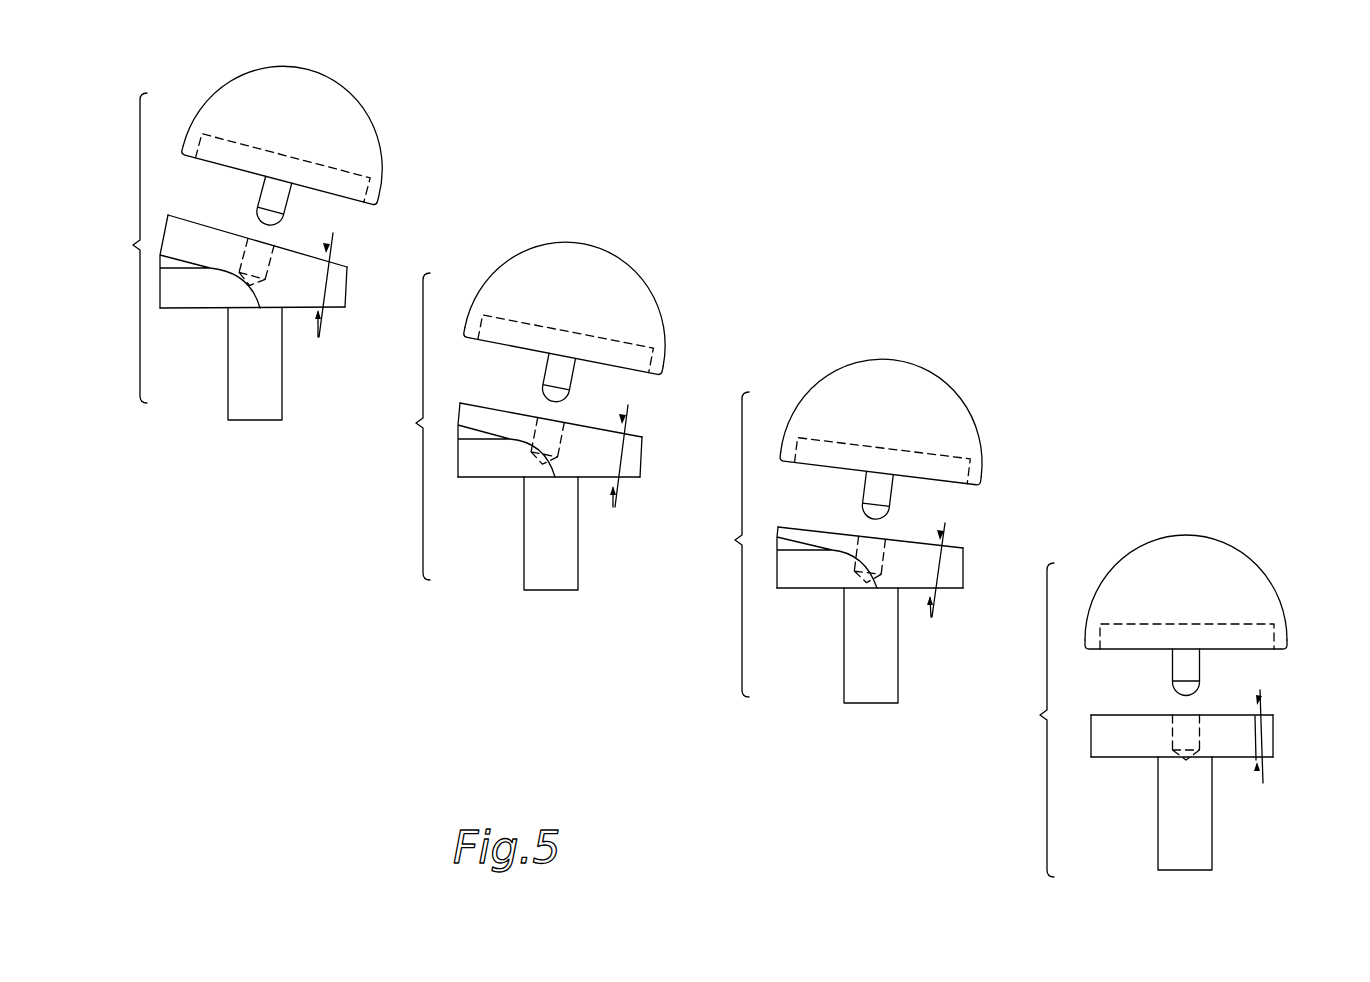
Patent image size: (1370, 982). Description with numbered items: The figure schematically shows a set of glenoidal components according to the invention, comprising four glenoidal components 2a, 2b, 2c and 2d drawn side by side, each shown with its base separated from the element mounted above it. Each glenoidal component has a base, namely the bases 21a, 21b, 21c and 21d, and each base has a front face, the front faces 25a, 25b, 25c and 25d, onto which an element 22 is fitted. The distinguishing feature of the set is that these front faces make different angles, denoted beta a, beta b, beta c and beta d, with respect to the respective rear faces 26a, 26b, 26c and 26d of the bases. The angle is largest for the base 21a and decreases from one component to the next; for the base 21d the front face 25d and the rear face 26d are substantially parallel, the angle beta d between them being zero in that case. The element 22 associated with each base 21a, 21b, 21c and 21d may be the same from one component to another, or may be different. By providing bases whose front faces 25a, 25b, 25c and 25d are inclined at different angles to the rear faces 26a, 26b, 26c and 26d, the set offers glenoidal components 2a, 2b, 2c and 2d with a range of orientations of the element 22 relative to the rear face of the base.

The glenoidal component 2a is at (124, 248).
The glenoidal component 2b is at (409, 426).
The glenoidal component 2c is at (726, 544).
The glenoidal component 2d is at (1032, 720).
The element 22 is at (350, 123).
The base 21a is at (185, 288).
The base 21b is at (470, 463).
The base 21c is at (787, 580).
The base 21d is at (1102, 743).
The front face 25a is at (205, 222).
The front face 25b is at (505, 408).
The front face 25c is at (818, 529).
The front face 25d is at (1127, 715).
The rear face 26a is at (297, 310).
The rear face 26b is at (590, 480).
The rear face 26c is at (908, 591).
The rear face 26d is at (1223, 761).